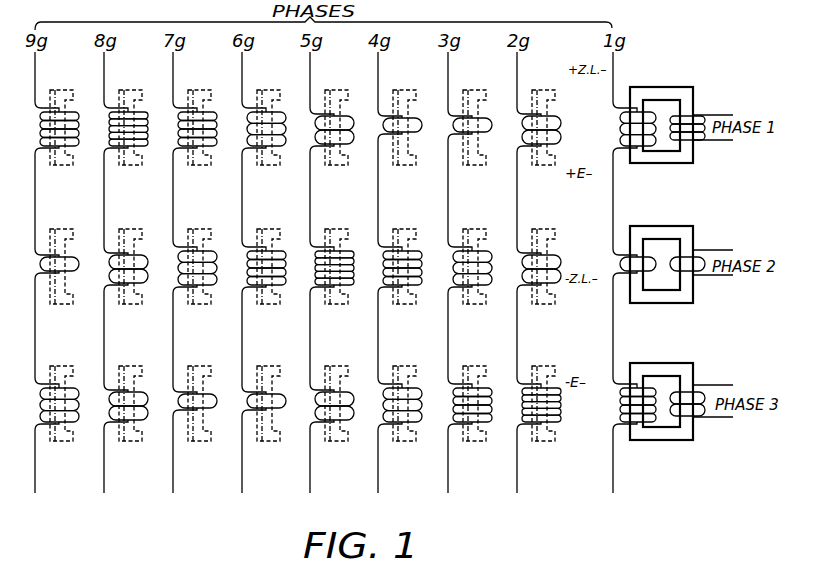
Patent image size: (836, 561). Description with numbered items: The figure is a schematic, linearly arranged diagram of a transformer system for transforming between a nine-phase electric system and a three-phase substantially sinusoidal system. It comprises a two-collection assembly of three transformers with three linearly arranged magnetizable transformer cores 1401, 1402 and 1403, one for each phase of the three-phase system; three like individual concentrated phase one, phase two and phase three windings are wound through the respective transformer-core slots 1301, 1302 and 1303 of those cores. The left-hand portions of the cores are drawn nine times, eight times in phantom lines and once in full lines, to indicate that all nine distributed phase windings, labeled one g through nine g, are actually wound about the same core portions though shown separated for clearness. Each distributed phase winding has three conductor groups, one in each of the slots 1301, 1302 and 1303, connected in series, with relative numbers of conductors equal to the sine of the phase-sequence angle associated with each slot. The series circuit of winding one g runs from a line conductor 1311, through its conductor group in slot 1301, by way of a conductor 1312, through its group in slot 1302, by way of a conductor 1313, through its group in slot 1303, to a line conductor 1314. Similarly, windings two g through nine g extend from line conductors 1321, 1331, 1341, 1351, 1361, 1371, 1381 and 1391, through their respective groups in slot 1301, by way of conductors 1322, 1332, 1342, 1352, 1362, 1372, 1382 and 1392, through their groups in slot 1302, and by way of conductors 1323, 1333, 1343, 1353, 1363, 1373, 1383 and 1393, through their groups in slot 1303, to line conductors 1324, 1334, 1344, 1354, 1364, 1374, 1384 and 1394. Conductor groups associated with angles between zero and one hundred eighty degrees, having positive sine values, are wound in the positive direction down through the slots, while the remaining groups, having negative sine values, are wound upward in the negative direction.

The line conductor 1391 is at (35, 62).
The conductor 1392 is at (42, 187).
The conductor 1393 is at (35, 332).
The line conductor 1394 is at (42, 465).
The line conductor 1381 is at (104, 62).
The conductor 1382 is at (111, 187).
The conductor 1383 is at (104, 332).
The line conductor 1384 is at (111, 465).
The line conductor 1371 is at (173, 62).
The conductor 1372 is at (180, 187).
The conductor 1373 is at (173, 332).
The line conductor 1374 is at (180, 465).
The line conductor 1361 is at (242, 62).
The conductor 1362 is at (249, 187).
The conductor 1363 is at (242, 332).
The line conductor 1364 is at (249, 465).
The line conductor 1351 is at (310, 62).
The conductor 1352 is at (317, 187).
The conductor 1353 is at (310, 332).
The line conductor 1354 is at (317, 465).
The line conductor 1341 is at (378, 62).
The conductor 1342 is at (385, 187).
The conductor 1343 is at (378, 332).
The line conductor 1344 is at (385, 465).
The line conductor 1331 is at (448, 62).
The conductor 1332 is at (455, 187).
The conductor 1333 is at (448, 332).
The line conductor 1334 is at (455, 465).
The line conductor 1321 is at (517, 62).
The conductor 1322 is at (524, 187).
The conductor 1323 is at (517, 332).
The line conductor 1324 is at (524, 465).
The line conductor 1311 is at (613, 62).
The conductor 1312 is at (613, 192).
The conductor 1313 is at (613, 332).
The line conductor 1314 is at (620, 465).
The transformer core 1401 is at (672, 96).
The transformer core 1402 is at (672, 233).
The transformer core 1403 is at (673, 372).
The transformer-core slot 1301 is at (665, 113).
The transformer-core slot 1302 is at (665, 252).
The transformer-core slot 1303 is at (665, 392).